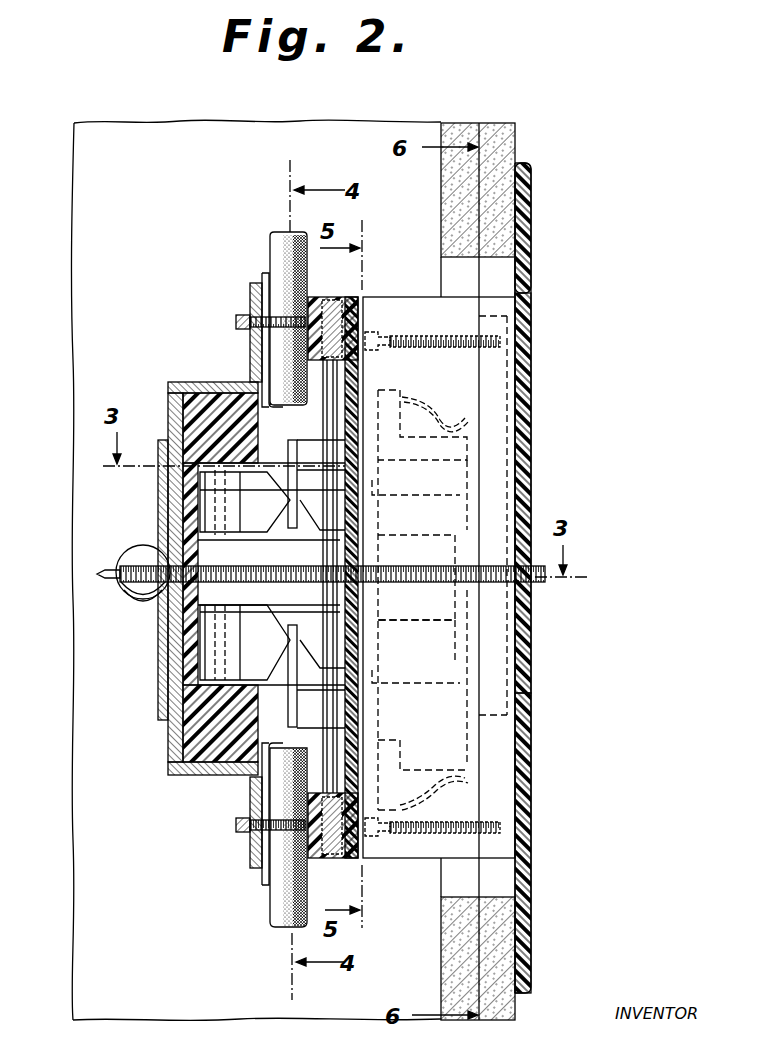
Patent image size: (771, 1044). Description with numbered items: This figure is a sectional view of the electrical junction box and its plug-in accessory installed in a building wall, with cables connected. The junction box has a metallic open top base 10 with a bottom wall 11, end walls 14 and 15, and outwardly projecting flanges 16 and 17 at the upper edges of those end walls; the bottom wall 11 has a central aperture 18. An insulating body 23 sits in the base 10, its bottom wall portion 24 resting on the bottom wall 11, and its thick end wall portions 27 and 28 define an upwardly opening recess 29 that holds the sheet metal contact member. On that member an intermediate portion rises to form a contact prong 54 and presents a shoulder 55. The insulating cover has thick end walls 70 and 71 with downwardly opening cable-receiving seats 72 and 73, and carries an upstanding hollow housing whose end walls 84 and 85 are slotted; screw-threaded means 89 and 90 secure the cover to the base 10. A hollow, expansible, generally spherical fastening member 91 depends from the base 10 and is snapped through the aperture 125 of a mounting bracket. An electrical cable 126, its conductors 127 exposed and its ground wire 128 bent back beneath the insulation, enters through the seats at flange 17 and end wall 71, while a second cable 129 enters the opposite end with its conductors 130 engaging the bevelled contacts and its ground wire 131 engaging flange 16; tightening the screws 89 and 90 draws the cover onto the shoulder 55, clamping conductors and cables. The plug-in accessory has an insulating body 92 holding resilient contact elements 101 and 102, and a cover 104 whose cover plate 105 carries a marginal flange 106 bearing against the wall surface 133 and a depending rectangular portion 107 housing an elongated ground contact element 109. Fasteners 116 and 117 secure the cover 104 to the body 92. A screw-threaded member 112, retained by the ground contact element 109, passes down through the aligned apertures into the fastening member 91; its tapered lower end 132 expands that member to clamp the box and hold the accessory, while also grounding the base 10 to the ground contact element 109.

The base 10 is at (162, 379).
The bottom wall 11 is at (168, 424).
The end wall 14 is at (195, 382).
The end wall 15 is at (183, 776).
The flange 16 is at (250, 291).
The flange 17 is at (250, 851).
The central aperture 18 is at (158, 532).
The body 23 is at (190, 402).
The bottom wall portion 24 is at (190, 664).
The end wall portion 27 is at (213, 399).
The end wall portion 28 is at (207, 776).
The recess 29 is at (195, 471).
The contact prong 54 is at (408, 629).
The shoulder 55 is at (345, 521).
The end wall 70 is at (325, 297).
The end wall 71 is at (343, 859).
The cable-receiving seats 72 is at (312, 297).
The cable-receiving seats 73 is at (327, 843).
The end wall 84 is at (375, 481).
The end wall 85 is at (375, 682).
The screw-threaded means 89 is at (236, 321).
The screw-threaded means 90 is at (236, 825).
The fastening member 91 is at (130, 590).
The body 92 is at (405, 296).
The resilient contact element 101 is at (437, 417).
The resilient contact element 102 is at (430, 794).
The cover 104 is at (533, 830).
The cover plate 105 is at (532, 421).
The marginal flange 106 is at (532, 207).
The depending rectangular portion 107 is at (498, 297).
The ground contact element 109 is at (497, 679).
The screw-threaded member 112 is at (405, 577).
The fastening means 116 is at (405, 341).
The fastening means 117 is at (432, 833).
The aperture 125 is at (162, 613).
The electrical cable 126 is at (282, 907).
The conductors 127 is at (298, 702).
The ground wire 128 is at (264, 879).
The second cable 129 is at (292, 230).
The conductors 130 is at (298, 444).
The ground wire 131 is at (264, 273).
The lower end 132 is at (100, 574).
The wall surface 133 is at (455, 221).